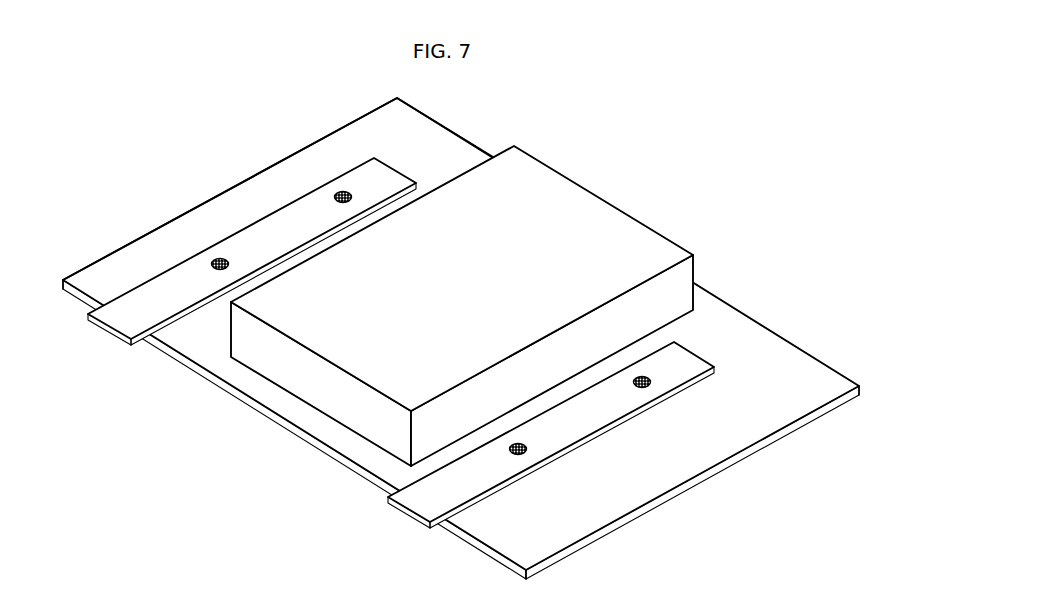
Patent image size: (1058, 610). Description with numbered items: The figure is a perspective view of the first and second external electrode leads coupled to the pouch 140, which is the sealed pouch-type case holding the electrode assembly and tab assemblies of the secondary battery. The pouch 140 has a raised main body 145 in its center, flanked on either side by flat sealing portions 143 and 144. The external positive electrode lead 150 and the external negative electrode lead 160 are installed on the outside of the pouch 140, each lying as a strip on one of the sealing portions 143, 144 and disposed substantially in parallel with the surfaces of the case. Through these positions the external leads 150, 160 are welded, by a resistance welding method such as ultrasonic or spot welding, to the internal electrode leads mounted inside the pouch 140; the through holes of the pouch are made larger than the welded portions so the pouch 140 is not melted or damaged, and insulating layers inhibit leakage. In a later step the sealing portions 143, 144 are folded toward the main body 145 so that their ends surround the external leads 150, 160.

The pouch 140 is at (461, 338).
The sealing portion 143 is at (622, 501).
The sealing portion 144 is at (159, 240).
The main body 145 is at (335, 349).
The external positive electrode lead 150 is at (682, 372).
The external negative electrode lead 160 is at (302, 203).